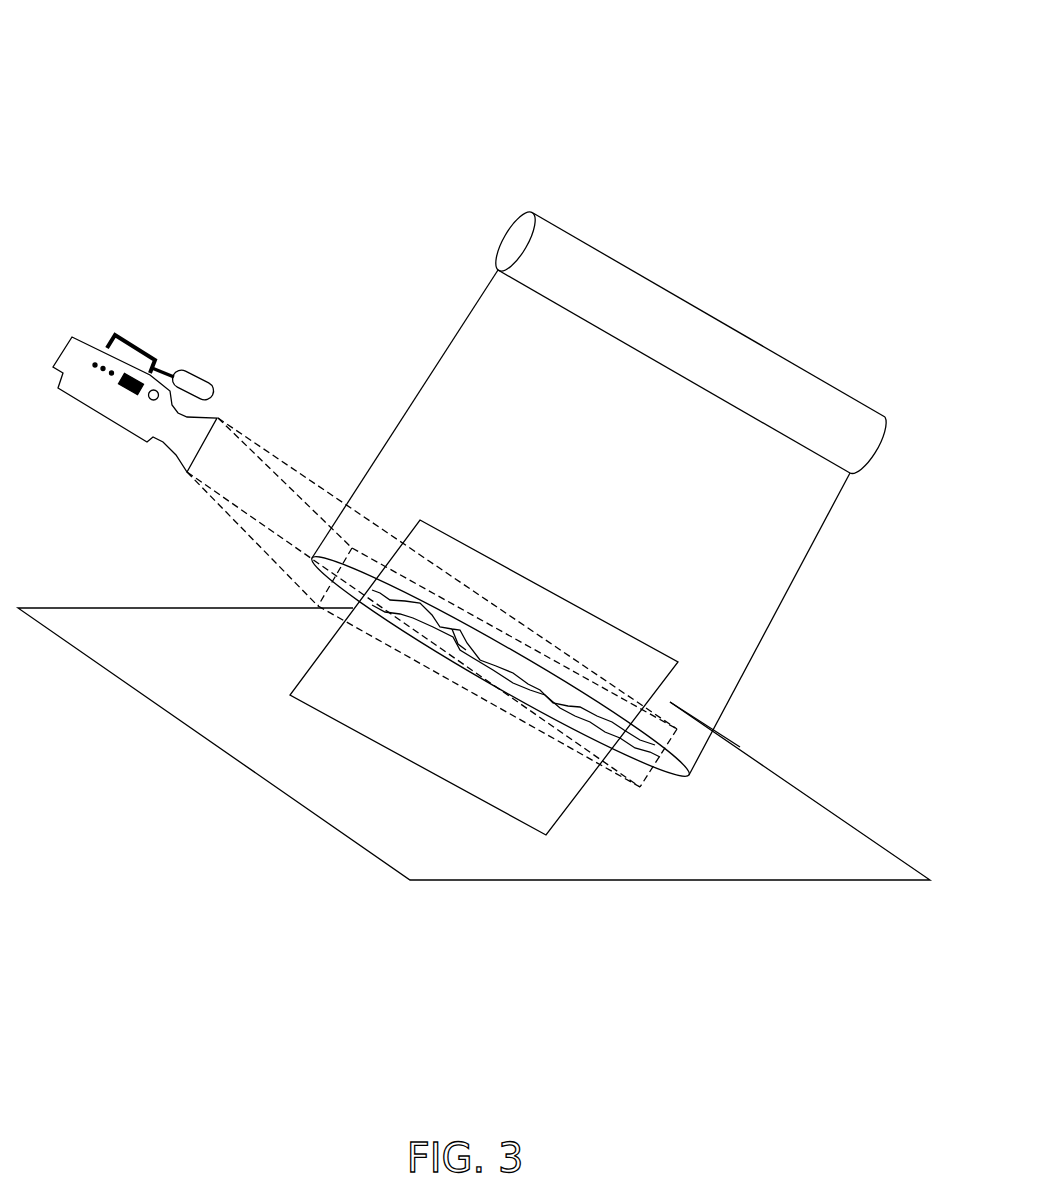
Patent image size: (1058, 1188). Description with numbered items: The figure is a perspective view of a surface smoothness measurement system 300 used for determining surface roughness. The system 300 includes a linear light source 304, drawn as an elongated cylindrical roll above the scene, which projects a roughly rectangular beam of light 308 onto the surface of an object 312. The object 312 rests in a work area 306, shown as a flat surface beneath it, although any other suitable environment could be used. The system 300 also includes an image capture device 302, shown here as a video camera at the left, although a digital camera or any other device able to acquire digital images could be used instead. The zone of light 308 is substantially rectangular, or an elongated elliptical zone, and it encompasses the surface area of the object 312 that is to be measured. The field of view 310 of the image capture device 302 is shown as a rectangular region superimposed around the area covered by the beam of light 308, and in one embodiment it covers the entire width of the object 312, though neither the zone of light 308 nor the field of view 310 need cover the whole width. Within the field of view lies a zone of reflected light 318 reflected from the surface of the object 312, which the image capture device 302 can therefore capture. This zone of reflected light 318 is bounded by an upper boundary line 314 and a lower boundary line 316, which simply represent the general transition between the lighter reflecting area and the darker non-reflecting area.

The surface smoothness measurement system 300 is at (284, 197).
The image capture device 302 is at (83, 342).
The linear light source 304 is at (627, 263).
The work area 306 is at (407, 830).
The beam of light 308 is at (366, 574).
The field of view 310 is at (687, 690).
The object 312 is at (516, 775).
The upper boundary line 314 is at (452, 625).
The lower boundary line 316 is at (460, 655).
The zone of reflected light 318 is at (480, 637).